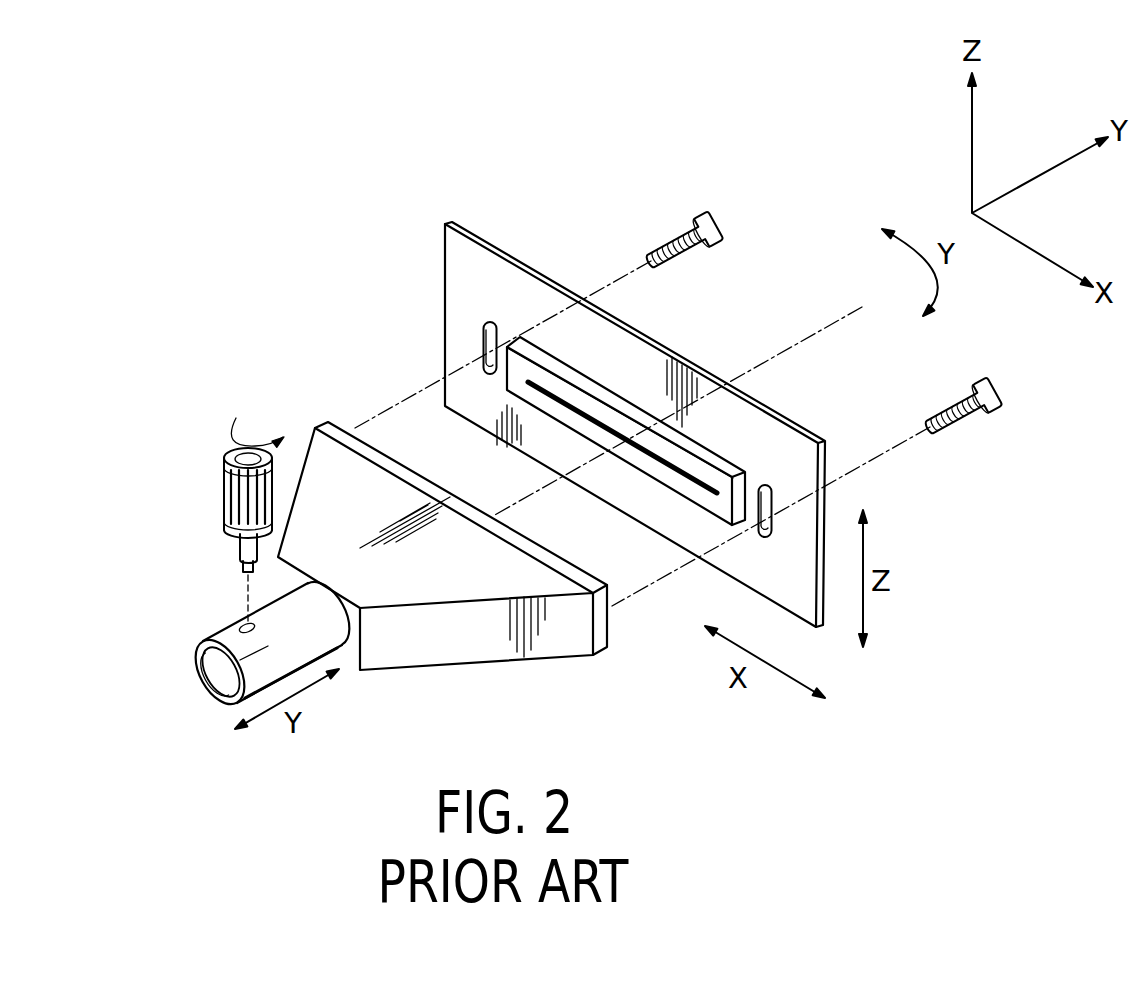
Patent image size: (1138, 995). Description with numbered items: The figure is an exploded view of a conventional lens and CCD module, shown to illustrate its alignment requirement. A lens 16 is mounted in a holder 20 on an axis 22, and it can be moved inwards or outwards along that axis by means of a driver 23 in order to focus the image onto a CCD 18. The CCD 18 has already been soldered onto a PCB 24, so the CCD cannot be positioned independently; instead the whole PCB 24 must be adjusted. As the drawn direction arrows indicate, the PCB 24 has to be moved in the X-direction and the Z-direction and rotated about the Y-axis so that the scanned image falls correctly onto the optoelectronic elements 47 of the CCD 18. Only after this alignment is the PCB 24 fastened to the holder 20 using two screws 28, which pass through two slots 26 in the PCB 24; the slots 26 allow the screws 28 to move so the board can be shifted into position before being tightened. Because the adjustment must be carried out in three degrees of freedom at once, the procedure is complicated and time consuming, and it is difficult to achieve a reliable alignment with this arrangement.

The lens 16 is at (210, 658).
The CCD 18 is at (563, 391).
The holder 20 is at (473, 655).
The axes 22 is at (770, 357).
The driver 23 is at (225, 510).
The PCB 24 is at (520, 277).
The slots 26 is at (484, 348).
The screws 28 is at (947, 408).
The optoelectronic elements 47 is at (690, 470).